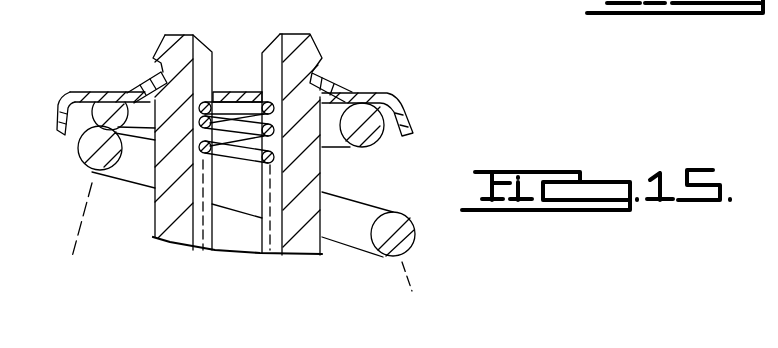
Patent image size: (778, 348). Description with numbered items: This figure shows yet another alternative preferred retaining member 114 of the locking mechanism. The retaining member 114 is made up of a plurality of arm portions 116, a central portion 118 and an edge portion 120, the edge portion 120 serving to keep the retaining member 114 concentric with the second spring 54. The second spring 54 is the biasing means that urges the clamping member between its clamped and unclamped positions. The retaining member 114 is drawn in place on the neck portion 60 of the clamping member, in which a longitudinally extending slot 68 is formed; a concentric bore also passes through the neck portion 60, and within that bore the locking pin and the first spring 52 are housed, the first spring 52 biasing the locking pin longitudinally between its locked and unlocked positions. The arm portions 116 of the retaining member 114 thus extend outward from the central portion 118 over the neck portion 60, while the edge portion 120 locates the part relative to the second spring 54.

The first spring 52 is at (242, 150).
The second spring 54 is at (413, 222).
The neck portion 60 is at (160, 242).
The longitudinally extending slot 68 is at (264, 246).
The retaining member 114 is at (434, 112).
The arm portions 116 is at (155, 100).
The central portion 118 is at (238, 94).
The edge portion 120 is at (74, 83).